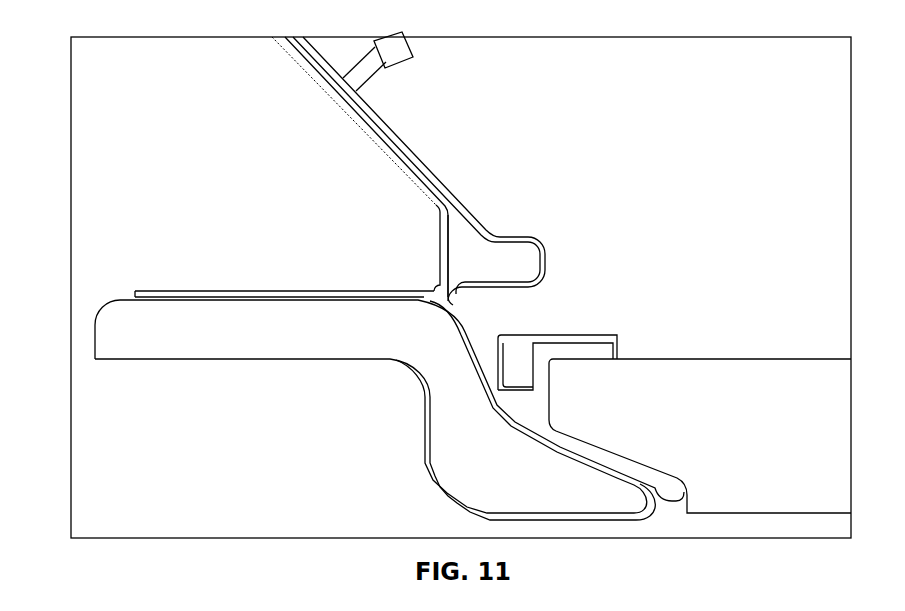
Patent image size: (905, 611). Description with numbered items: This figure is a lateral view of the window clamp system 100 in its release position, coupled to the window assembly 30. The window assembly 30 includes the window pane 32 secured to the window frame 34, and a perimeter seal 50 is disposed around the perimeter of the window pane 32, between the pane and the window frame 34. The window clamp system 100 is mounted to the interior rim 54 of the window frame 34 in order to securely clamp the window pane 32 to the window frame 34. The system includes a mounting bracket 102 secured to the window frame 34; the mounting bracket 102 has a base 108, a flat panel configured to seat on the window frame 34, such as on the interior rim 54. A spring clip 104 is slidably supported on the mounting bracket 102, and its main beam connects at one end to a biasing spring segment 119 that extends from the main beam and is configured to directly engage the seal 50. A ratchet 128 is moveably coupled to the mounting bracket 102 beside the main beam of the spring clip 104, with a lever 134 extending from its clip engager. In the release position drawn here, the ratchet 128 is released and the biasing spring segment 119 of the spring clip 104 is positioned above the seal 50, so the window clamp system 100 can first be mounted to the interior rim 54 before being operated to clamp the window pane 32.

The window assembly 30 is at (90, 347).
The window pane 32 is at (756, 356).
The window frame 34 is at (282, 338).
The perimeter seal 50 is at (597, 334).
The interior rim 54 is at (192, 342).
The window clamp system 100 is at (464, 96).
The mounting bracket 102 is at (204, 287).
The spring clip 104 is at (479, 206).
The base 108 is at (273, 290).
The biasing spring segment 119 is at (554, 242).
The ratchet 128 is at (376, 108).
The lever 134 is at (363, 58).